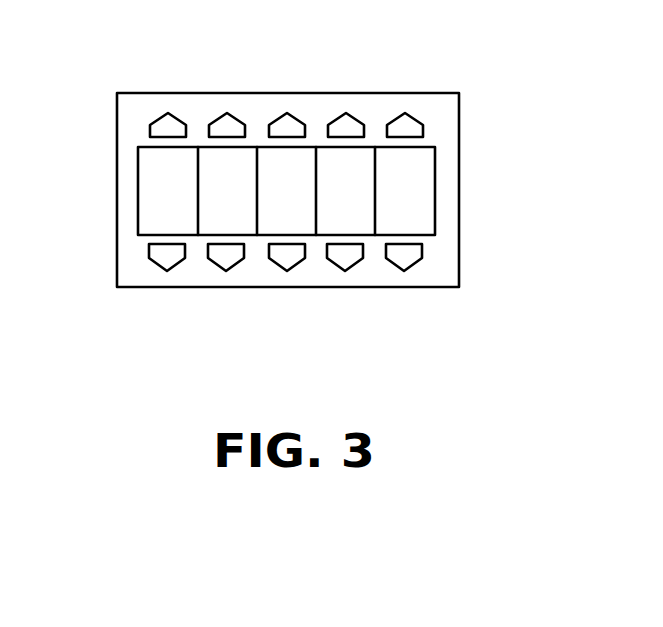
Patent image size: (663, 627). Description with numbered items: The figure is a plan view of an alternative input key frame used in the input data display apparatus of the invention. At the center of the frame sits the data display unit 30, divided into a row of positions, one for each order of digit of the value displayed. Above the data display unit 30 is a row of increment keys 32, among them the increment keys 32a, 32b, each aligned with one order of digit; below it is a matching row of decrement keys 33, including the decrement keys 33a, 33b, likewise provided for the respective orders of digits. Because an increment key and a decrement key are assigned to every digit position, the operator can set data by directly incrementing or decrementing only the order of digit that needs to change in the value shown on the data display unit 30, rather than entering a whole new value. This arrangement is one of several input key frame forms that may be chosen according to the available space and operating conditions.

The data display unit 30 is at (153, 188).
The increment keys 32 is at (345, 88).
The increment key 32a is at (467, 129).
The increment key 32b is at (345, 113).
The decrement keys 33 is at (344, 303).
The decrement key 33a is at (466, 262).
The decrement key 33b is at (348, 266).